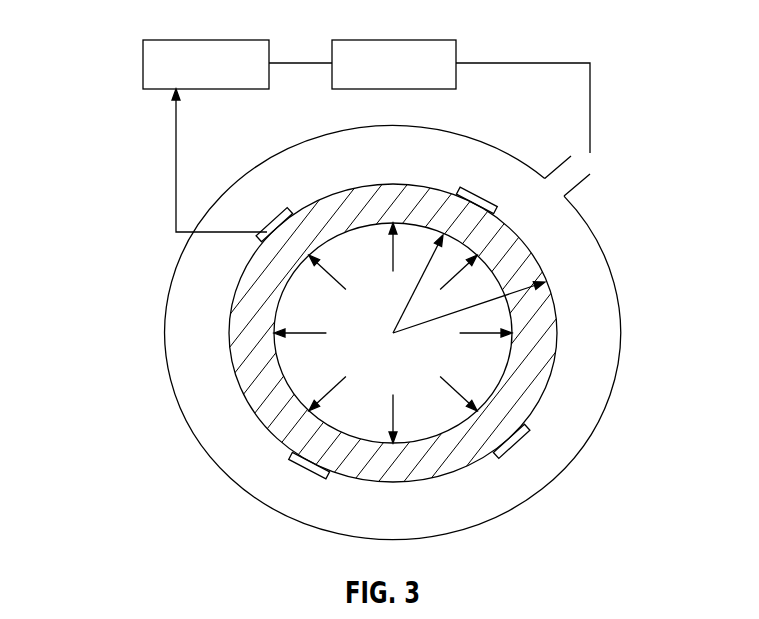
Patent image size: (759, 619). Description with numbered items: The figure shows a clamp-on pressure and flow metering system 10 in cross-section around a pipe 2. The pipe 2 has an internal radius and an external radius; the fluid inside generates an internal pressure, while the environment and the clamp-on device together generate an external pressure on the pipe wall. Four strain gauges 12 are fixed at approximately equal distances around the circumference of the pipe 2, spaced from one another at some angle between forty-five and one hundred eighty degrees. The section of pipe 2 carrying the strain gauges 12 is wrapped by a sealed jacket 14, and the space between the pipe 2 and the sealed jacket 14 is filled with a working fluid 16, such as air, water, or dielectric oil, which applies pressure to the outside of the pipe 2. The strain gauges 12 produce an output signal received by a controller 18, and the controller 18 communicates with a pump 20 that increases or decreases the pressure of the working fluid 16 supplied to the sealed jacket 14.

The pipe 2 is at (227, 334).
The system 10 is at (112, 175).
The strain gauges 12 is at (274, 221).
The sealed jacket 14 is at (244, 172).
The working fluid 16 is at (574, 174).
The controller 18 is at (207, 39).
The pump 20 is at (394, 39).